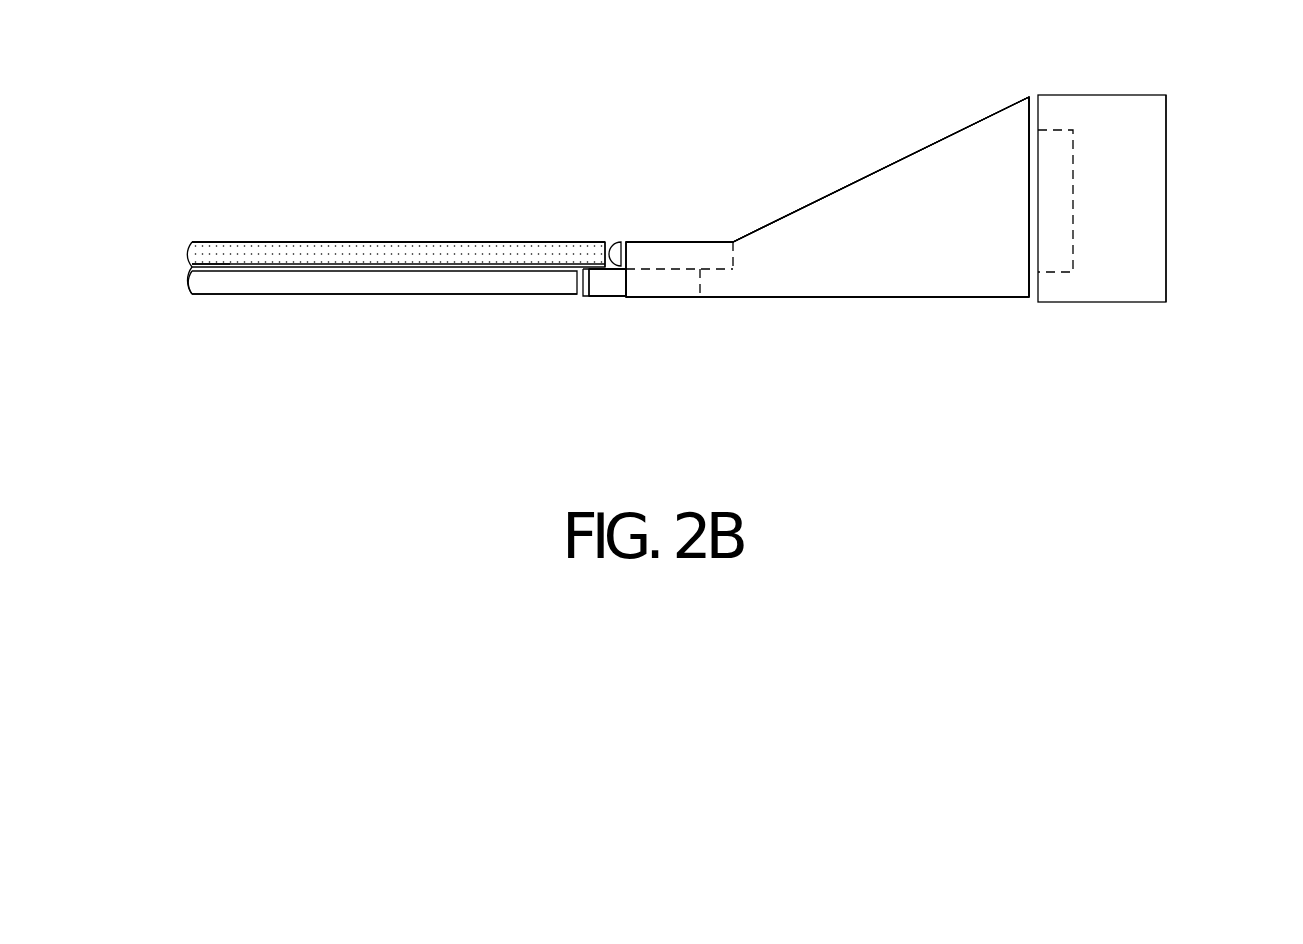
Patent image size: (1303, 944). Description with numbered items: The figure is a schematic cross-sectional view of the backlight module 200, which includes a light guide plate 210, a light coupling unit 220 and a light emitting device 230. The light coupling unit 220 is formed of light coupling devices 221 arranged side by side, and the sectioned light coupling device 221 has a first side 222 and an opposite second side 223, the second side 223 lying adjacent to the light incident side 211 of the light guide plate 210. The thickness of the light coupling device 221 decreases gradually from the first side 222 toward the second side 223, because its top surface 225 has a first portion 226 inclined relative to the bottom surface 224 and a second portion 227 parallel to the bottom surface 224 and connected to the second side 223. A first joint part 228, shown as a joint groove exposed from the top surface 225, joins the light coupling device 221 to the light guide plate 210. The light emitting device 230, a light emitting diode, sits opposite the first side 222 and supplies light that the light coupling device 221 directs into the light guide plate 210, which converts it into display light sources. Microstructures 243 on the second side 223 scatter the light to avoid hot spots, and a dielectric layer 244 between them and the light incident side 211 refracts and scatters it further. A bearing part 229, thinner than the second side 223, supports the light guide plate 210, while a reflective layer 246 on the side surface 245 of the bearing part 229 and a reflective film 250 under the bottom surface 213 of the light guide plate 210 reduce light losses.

The backlight module 200 is at (1302, 455).
The light guide plate 210 is at (290, 255).
The light incident side 211 is at (527, 242).
The bottom surface 213 is at (210, 254).
The light coupling unit 220 is at (827, 197).
The light coupling device 221 is at (833, 284).
The first side 222 is at (1019, 230).
The second side 223 is at (637, 257).
The bottom surface 224 is at (1028, 300).
The top surface 225 is at (883, 84).
The first portion 226 is at (865, 174).
The second portion 227 is at (702, 238).
The first joint part 228 is at (700, 297).
The bearing part 229 is at (595, 283).
The light emitting device 230 is at (1158, 198).
The microstructure 243 is at (621, 242).
The dielectric layer 244 is at (610, 240).
The side surface 245 is at (602, 279).
The reflective layer 246 is at (585, 295).
The reflective film 250 is at (338, 283).